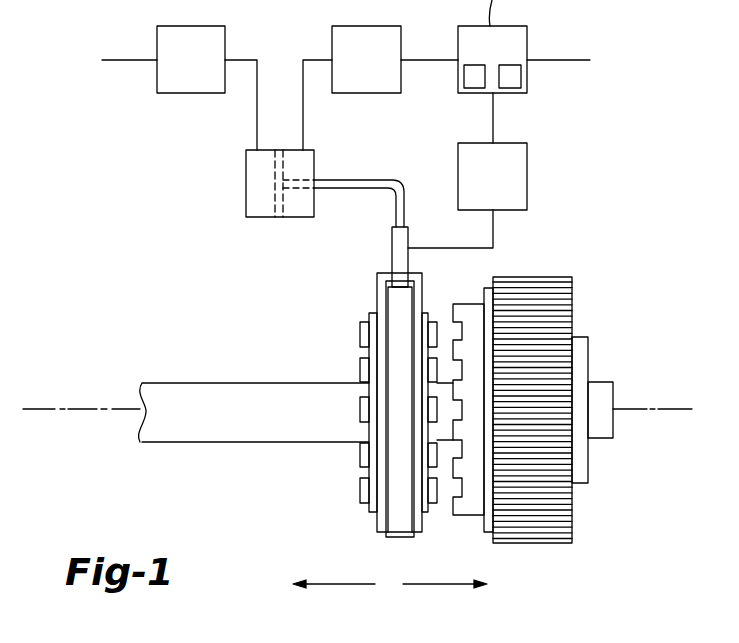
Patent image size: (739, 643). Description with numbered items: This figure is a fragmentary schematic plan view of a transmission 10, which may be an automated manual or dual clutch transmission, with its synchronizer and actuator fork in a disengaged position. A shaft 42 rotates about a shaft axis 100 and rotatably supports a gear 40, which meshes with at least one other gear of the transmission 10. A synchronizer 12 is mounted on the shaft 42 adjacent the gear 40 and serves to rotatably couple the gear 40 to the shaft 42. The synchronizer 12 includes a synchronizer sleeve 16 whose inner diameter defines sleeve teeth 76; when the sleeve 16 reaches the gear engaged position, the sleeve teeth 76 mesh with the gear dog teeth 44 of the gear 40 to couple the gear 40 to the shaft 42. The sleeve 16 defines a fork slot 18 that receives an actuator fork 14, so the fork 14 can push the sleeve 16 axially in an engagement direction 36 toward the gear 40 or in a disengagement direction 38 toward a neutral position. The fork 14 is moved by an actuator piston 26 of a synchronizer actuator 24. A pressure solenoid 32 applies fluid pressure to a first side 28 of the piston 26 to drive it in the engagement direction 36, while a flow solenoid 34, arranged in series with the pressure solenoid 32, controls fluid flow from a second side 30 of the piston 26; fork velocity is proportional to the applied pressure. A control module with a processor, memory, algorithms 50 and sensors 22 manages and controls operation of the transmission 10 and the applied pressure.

The transmission 10 is at (577, 220).
The synchronizer 12 is at (368, 418).
The actuator fork 14 is at (392, 238).
The synchronizer sleeve 16 is at (377, 523).
The fork slot 18 is at (395, 304).
The sensors 22 is at (482, 189).
The synchronizer actuator 24 is at (376, 168).
The actuator piston 26 is at (275, 197).
The first side of the actuator piston 28 is at (263, 166).
The second side of the actuator piston 30 is at (313, 162).
The pressure solenoid 32 is at (181, 72).
The flow solenoid 34 is at (356, 72).
The engagement direction 36 is at (440, 585).
The disengagement direction 38 is at (345, 585).
The gear 40 is at (604, 296).
The shaft 42 is at (243, 383).
The gear dog teeth 44 is at (453, 304).
The algorithms 50 is at (492, 59).
The sleeve teeth 76 is at (432, 503).
The shaft axis 100 is at (673, 408).